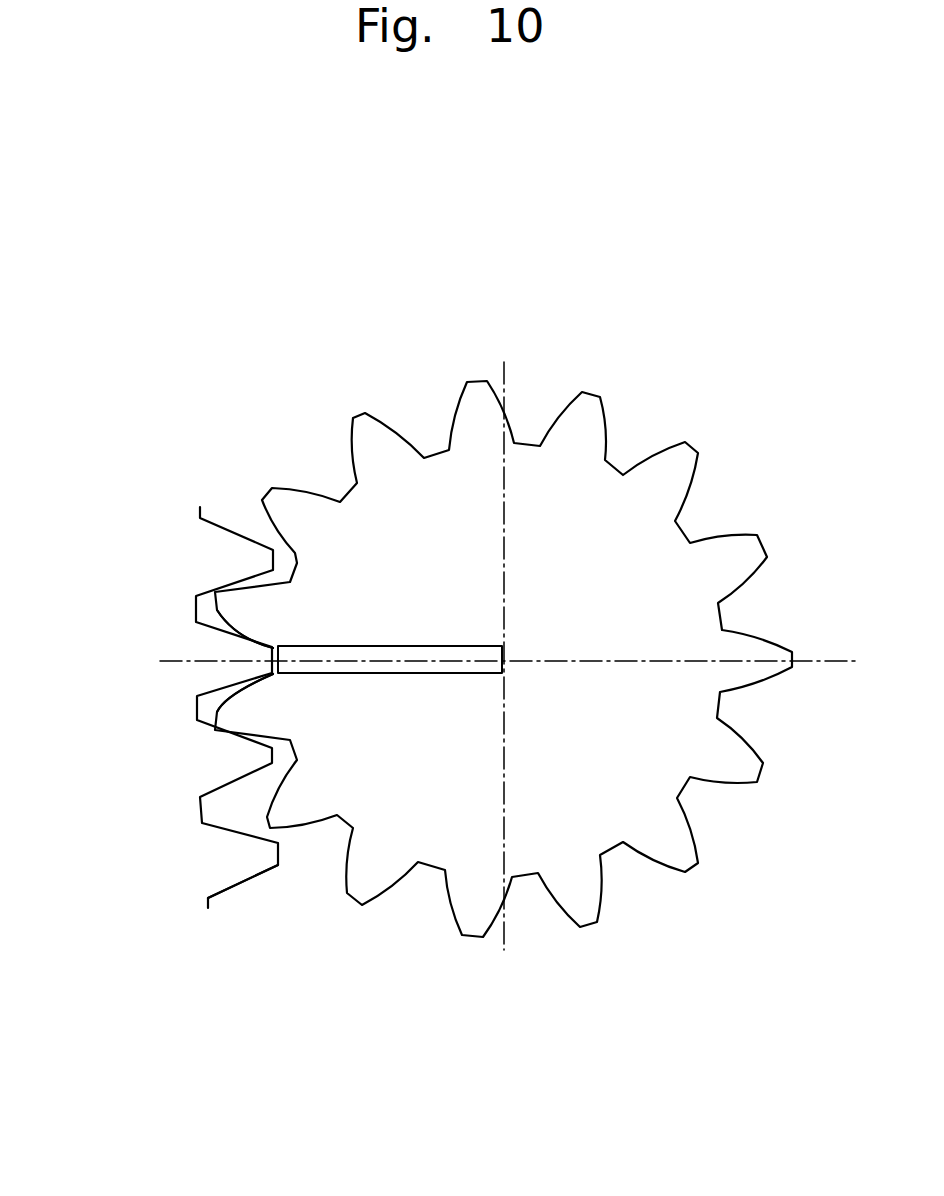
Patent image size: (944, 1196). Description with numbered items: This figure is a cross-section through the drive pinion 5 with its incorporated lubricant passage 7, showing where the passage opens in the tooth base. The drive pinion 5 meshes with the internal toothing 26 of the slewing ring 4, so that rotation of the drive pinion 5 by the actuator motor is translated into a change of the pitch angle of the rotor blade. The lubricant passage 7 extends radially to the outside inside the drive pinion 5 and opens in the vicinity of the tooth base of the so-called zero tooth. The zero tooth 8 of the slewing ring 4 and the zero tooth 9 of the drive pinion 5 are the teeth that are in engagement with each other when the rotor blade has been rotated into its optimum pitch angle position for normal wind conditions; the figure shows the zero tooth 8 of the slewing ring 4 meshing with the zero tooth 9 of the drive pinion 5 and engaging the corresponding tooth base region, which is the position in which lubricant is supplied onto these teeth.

The slewing ring 4 is at (186, 865).
The drive pinion 5 is at (577, 508).
The lubricant passage 7 is at (408, 647).
The zero tooth 8 is at (238, 676).
The zero tooth 9 is at (263, 673).
The internal toothing 26 is at (266, 878).